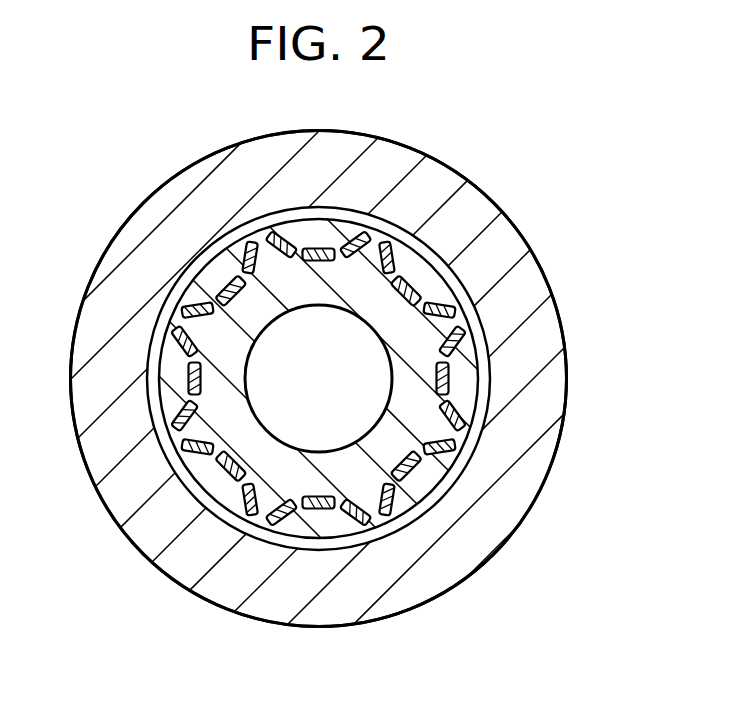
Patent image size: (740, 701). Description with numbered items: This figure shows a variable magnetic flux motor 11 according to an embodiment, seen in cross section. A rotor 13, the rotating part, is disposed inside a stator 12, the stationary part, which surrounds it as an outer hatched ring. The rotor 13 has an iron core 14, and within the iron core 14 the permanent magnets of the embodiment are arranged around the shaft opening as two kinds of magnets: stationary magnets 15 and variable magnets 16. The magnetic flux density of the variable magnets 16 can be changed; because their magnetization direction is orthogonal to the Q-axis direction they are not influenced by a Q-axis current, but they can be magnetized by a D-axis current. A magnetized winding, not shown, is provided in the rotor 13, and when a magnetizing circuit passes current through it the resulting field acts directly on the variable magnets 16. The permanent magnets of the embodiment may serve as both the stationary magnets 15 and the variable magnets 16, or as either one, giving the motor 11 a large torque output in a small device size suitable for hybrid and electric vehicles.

The variable magnetic flux motor 11 is at (503, 153).
The stator 12 is at (548, 470).
The rotor 13 is at (545, 187).
The iron core 14 is at (433, 296).
The stationary magnets 15 is at (463, 322).
The variable magnets 16 is at (450, 360).